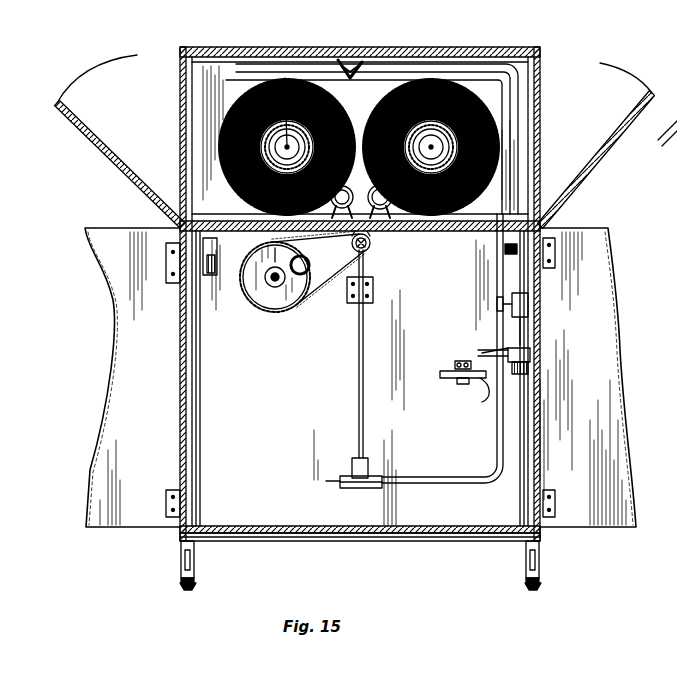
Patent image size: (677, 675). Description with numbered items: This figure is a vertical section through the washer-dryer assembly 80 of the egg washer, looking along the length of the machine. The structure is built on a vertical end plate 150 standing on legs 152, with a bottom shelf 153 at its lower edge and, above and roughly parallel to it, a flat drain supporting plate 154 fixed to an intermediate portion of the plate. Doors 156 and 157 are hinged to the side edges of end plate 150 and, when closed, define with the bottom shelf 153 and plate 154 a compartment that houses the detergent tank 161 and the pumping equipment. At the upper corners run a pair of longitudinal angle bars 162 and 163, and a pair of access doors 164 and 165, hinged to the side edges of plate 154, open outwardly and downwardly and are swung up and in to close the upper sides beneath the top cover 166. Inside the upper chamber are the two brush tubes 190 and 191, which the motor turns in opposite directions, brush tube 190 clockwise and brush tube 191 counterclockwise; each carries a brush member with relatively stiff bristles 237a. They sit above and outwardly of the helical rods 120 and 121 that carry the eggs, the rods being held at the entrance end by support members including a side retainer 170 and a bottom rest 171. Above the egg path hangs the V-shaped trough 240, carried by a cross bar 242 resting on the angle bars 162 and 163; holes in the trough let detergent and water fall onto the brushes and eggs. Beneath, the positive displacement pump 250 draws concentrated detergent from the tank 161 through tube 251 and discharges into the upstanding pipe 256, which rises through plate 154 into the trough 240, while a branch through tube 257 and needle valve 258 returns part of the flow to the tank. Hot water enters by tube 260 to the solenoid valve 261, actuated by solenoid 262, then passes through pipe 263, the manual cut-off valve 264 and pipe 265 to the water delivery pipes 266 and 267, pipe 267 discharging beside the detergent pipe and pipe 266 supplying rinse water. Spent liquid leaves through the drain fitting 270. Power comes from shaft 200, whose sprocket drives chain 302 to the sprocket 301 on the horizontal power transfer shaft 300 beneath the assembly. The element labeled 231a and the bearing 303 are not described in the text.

The washer-dryer assembly 80 is at (265, 50).
The helical rod 120 is at (316, 260).
The helical rod 121 is at (462, 237).
The end plate 150 is at (232, 516).
The leg 152 is at (182, 556).
The bottom shelf 153 is at (344, 526).
The drain supporting plate 154 is at (466, 238).
The door 156 is at (113, 322).
The door 157 is at (612, 358).
The detergent tank 161 is at (244, 218).
The angle bar 162 is at (181, 60).
The angle bar 163 is at (542, 70).
The access door 164 is at (138, 144).
The access door 165 is at (606, 150).
The top cover 166 is at (418, 62).
The side retainer 170 is at (370, 244).
The bottom rest 171 is at (268, 245).
The brush tube 190 is at (266, 88).
The brush tube 191 is at (439, 138).
The shaft 200 is at (373, 287).
The conduit 231a is at (462, 76).
The stiff bristles 237a is at (285, 78).
The V-shaped trough 240 is at (348, 72).
The cross bar 242 is at (240, 48).
The positive displacement pump 250 is at (362, 462).
The tube 251 is at (342, 478).
The pipe 256 is at (465, 80).
The tube 257 is at (482, 395).
The needle valve 258 is at (456, 380).
The tube 260 is at (480, 353).
The solenoid valve 261 is at (510, 346).
The solenoid 262 is at (522, 372).
The pipe 263 is at (530, 326).
The manual cut-off valve 264 is at (528, 304).
The pipe 265 is at (560, 262).
The water delivery pipe 266 is at (512, 250).
The water delivery pipe 267 is at (528, 122).
The drain fitting 270 is at (203, 258).
The power transfer shaft 300 is at (275, 306).
The sprocket 301 is at (282, 314).
The chain 302 is at (282, 308).
The bearing block 303 is at (372, 256).